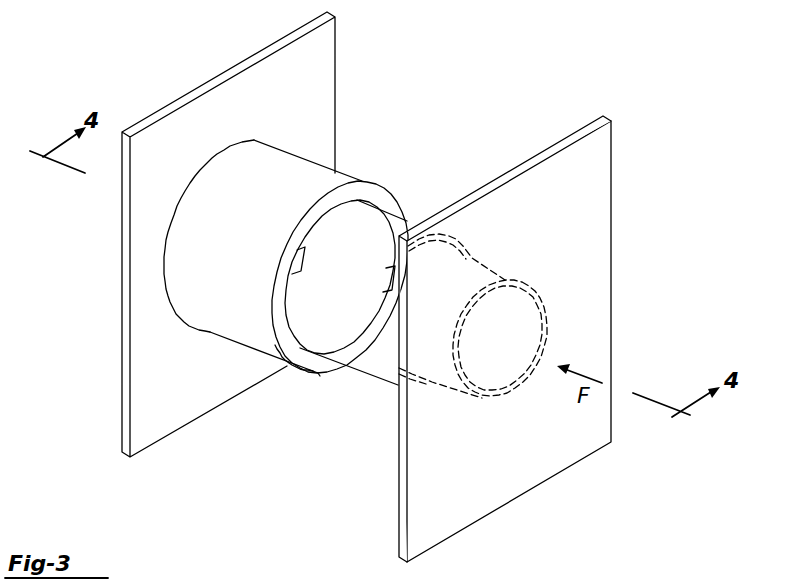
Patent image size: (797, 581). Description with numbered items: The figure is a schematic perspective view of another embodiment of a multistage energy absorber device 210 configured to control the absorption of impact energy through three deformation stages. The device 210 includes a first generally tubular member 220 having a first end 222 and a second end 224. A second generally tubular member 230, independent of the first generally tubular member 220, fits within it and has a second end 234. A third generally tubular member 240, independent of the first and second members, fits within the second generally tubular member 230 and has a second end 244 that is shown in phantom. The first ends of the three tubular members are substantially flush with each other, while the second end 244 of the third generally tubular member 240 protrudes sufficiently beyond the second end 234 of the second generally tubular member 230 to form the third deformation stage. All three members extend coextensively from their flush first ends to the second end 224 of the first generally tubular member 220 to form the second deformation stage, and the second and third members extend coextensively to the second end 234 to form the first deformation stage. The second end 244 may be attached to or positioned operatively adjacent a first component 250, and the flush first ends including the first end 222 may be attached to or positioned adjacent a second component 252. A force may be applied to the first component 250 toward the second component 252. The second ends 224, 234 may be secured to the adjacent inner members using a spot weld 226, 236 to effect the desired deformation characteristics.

The multistage energy absorber device 210 is at (331, 287).
The first generally tubular member 220 is at (273, 288).
The first end of the first generally tubular member 222 is at (164, 286).
The second end of the first generally tubular member 224 is at (276, 311).
The spot weld 226 is at (289, 264).
The second generally tubular member 230 is at (419, 217).
The second end of the second generally tubular member 234 is at (381, 380).
The spot weld 236 is at (384, 306).
The third generally tubular member 240 is at (490, 262).
The second end of the third generally tubular member 244 is at (549, 287).
The first component 250 is at (398, 526).
The second component 252 is at (121, 383).